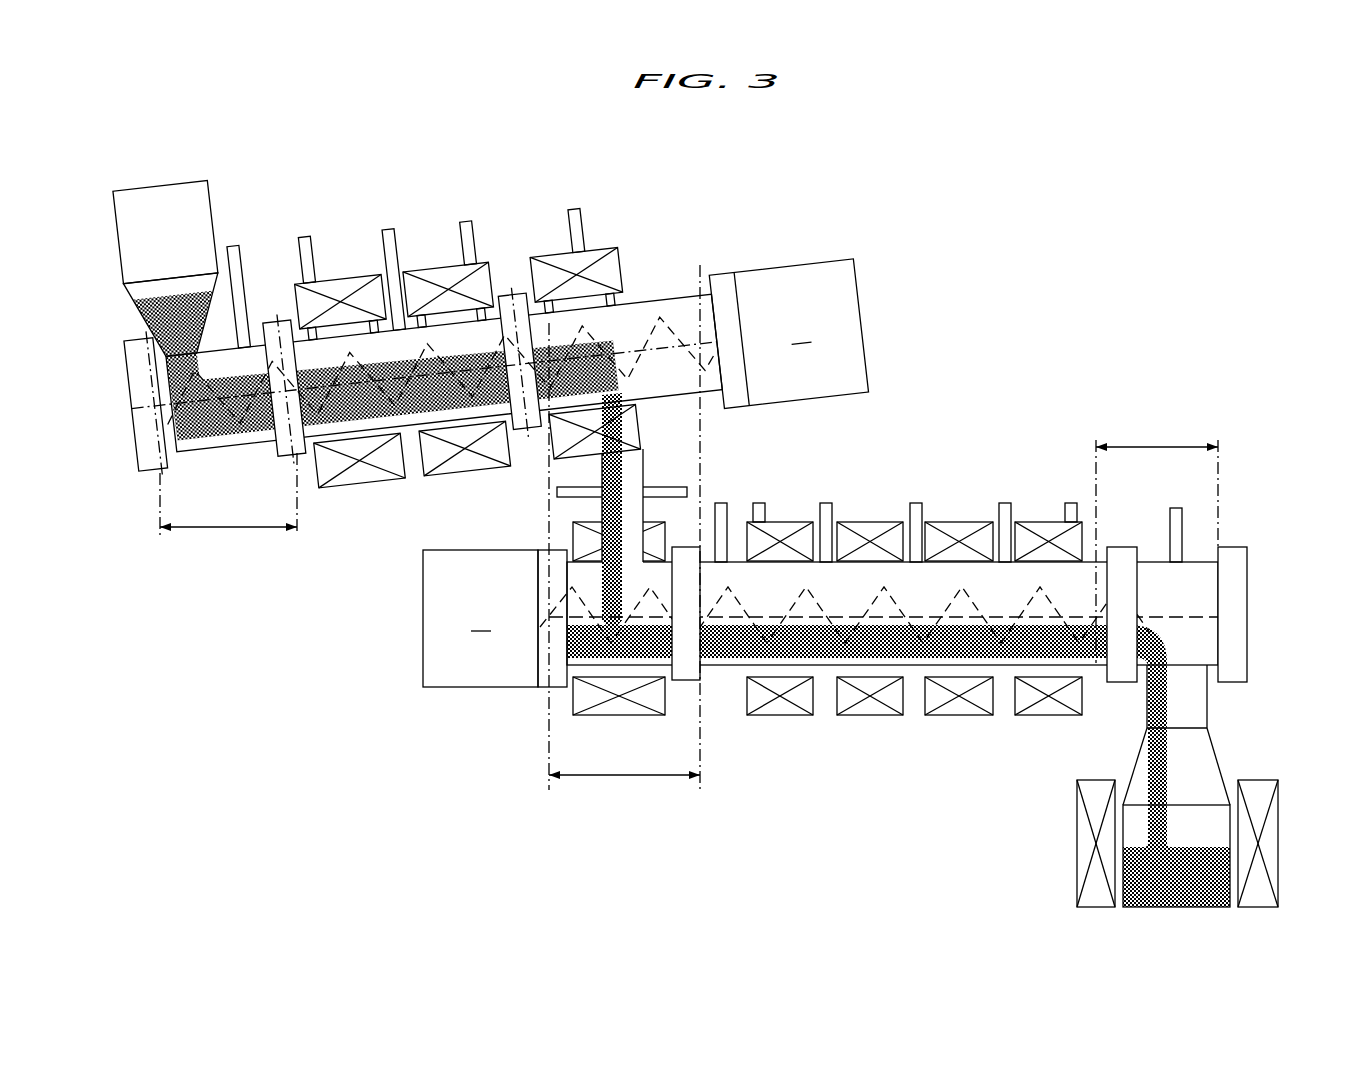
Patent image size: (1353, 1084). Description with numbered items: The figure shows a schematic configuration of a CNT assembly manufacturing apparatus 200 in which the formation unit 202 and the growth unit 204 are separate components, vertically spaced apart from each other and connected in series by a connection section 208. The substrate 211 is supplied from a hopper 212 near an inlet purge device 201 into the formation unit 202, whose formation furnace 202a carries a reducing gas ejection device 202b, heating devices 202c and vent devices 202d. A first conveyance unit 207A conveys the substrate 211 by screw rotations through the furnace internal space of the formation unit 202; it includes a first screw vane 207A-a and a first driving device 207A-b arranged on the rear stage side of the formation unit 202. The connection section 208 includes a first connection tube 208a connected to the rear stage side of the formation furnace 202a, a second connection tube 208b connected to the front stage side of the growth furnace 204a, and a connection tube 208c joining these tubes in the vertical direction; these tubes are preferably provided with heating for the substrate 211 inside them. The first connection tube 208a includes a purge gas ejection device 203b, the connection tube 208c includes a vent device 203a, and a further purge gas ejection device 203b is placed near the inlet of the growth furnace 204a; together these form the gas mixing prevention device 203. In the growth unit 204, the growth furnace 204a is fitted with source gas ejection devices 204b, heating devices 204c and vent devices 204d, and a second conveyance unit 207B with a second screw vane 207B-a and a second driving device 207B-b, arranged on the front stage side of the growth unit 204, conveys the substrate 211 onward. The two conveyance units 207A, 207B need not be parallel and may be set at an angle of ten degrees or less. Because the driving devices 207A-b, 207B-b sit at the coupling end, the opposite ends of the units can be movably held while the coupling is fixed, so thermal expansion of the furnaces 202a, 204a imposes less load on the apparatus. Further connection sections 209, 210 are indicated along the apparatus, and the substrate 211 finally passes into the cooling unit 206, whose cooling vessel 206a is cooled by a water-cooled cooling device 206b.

The CNT assembly manufacturing apparatus 200 is at (1047, 304).
The inlet purge device 201 is at (233, 248).
The formation unit 202 is at (268, 192).
The formation furnace 202a is at (356, 480).
The reducing gas ejection device 202b is at (385, 230).
The heating device 202c is at (343, 280).
The vent device 202d is at (304, 238).
The gas mixing prevention device 203 is at (657, 357).
The vent device 203a is at (675, 489).
The purge gas ejection device 203b is at (573, 209).
The growth unit 204 is at (778, 777).
The growth furnace 204a is at (827, 716).
The source gas ejection device 204b is at (826, 503).
The heating device 204c is at (926, 721).
The vent device 204d is at (760, 503).
The cooling unit 206 is at (1053, 907).
The cooling vessel 206a is at (1218, 758).
The water-cooled cooling device 206b is at (1077, 848).
The first conveyance unit 207A is at (700, 208).
The first screw vane 207A-a is at (684, 292).
The first driving device 207A-b is at (823, 262).
The second conveyance unit 207B is at (500, 752).
The second screw vane 207B-a is at (572, 587).
The second driving device 207B-b is at (424, 663).
The connection section 208 is at (597, 527).
The first connection tube 208a is at (657, 398).
The second connection tube 208b is at (666, 668).
The connection tube 208c is at (598, 508).
The connection section 209 is at (228, 494).
The connection section 210 is at (1157, 543).
The substrate 211 is at (172, 308).
The hopper 212 is at (147, 188).